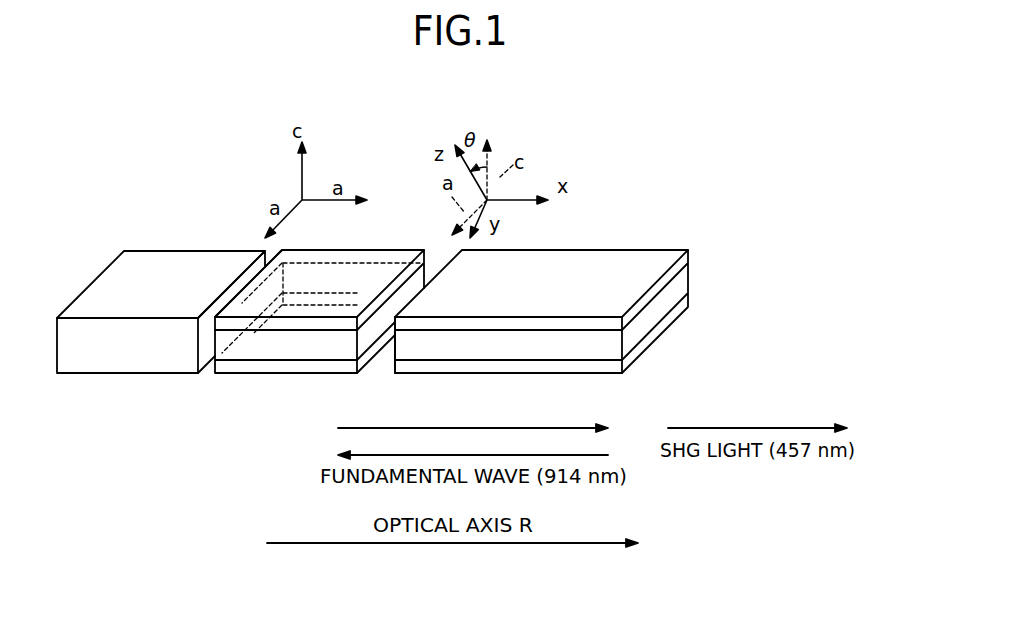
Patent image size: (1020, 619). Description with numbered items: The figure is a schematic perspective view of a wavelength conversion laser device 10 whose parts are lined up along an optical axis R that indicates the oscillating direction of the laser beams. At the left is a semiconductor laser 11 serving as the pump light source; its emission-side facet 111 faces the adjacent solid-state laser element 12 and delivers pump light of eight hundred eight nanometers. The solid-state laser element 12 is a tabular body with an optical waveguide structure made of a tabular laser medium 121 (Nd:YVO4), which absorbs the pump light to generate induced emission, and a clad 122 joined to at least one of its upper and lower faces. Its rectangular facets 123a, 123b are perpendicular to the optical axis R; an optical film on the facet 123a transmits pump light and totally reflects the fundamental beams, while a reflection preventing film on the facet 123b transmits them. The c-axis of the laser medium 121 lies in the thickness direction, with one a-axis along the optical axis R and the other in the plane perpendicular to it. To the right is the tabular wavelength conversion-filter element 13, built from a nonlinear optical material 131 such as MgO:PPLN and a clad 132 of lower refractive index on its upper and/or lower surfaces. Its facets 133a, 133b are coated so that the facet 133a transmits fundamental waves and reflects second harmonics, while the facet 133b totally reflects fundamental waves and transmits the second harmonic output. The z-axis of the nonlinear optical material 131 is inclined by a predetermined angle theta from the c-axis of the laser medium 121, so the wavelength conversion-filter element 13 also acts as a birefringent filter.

The wavelength conversion laser device 10 is at (628, 128).
The semiconductor laser 11 is at (142, 249).
The emission-side facet 111 is at (208, 338).
The solid-state laser element 12 is at (335, 249).
The laser medium 121 is at (222, 358).
The clad 122 is at (265, 365).
The facet 123a is at (262, 272).
The facet 123b is at (418, 280).
The wavelength conversion-filter element 13 is at (640, 249).
The nonlinear optical material 131 is at (600, 352).
The clad 132 is at (567, 325).
The facet 133a is at (395, 352).
The facet 133b is at (690, 275).